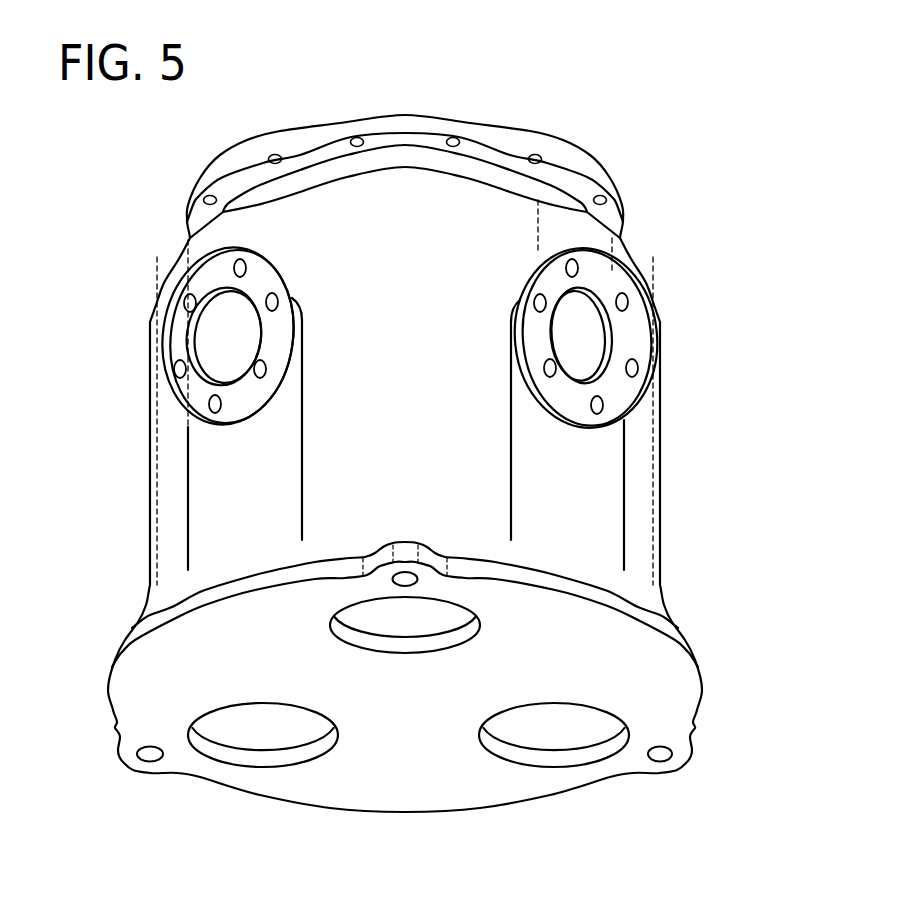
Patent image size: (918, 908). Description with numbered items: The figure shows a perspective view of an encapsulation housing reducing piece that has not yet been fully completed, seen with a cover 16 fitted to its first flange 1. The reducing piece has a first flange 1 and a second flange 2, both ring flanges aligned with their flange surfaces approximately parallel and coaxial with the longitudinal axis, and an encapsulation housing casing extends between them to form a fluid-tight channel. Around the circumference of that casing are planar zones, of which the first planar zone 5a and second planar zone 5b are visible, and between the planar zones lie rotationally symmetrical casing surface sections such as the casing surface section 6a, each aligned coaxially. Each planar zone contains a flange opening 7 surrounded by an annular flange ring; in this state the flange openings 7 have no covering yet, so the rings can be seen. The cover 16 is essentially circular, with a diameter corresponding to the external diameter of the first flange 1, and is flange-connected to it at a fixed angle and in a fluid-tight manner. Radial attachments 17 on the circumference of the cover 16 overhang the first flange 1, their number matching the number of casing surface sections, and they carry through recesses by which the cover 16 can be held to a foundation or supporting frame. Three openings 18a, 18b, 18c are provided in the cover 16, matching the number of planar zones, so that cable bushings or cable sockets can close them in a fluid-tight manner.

The first flange 1 is at (669, 615).
The second flange 2 is at (485, 134).
The first planar zone 5a is at (164, 510).
The second planar zone 5b is at (638, 510).
The casing surface section 6a is at (420, 197).
The flange opening 7 is at (212, 318).
The cover 16 is at (706, 699).
The radial attachment 17 is at (382, 556).
The opening 18a is at (427, 653).
The opening 18b is at (264, 770).
The opening 18c is at (556, 770).